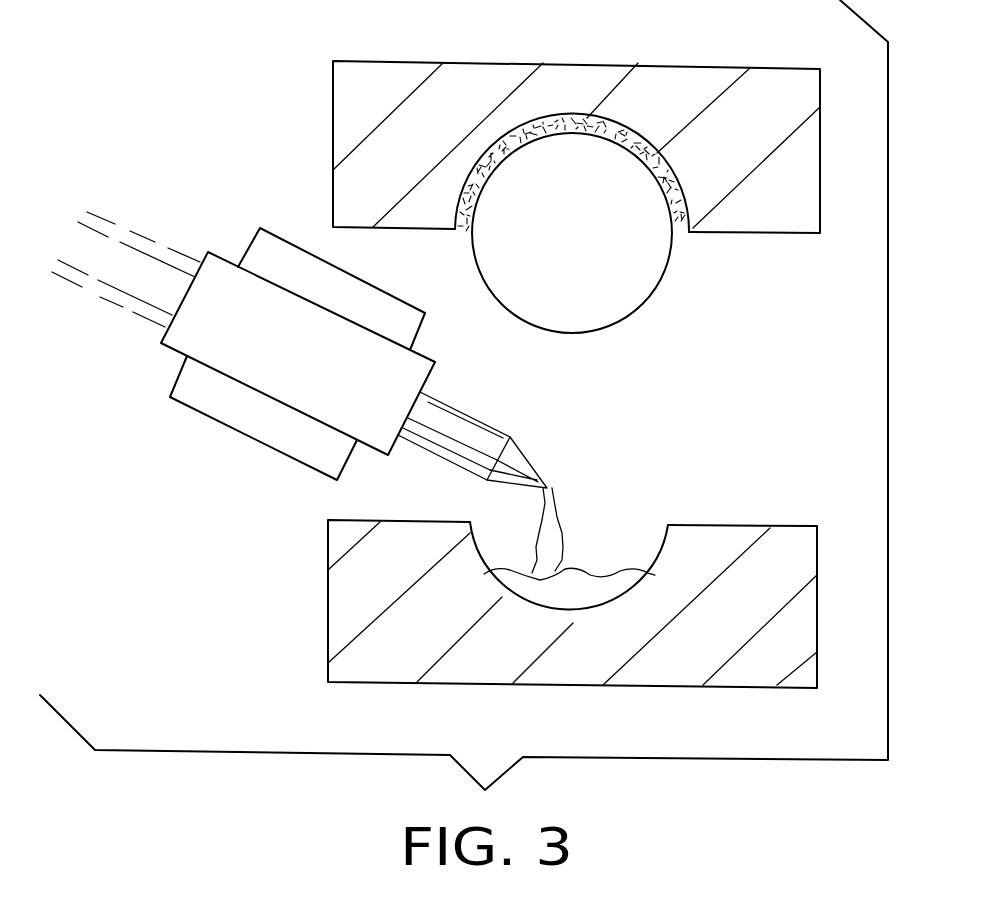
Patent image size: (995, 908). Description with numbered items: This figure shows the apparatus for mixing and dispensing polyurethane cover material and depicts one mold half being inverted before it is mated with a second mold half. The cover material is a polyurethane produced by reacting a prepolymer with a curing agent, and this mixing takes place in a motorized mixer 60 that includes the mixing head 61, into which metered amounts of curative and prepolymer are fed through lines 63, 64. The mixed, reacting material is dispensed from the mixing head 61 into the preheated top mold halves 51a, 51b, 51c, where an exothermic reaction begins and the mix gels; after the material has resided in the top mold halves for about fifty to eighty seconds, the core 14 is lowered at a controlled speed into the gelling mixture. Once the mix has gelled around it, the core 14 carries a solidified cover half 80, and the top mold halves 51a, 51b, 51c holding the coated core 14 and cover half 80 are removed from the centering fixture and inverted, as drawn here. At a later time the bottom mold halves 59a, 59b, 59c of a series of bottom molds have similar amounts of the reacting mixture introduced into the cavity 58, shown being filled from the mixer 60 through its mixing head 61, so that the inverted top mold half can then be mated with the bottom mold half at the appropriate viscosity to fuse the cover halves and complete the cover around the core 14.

The core 14 is at (591, 236).
The top mold half 51a is at (497, 40).
The top mold half 51b is at (576, 147).
The top mold half 51c is at (576, 147).
The cavity 58 is at (658, 545).
The bottom mold half 59a is at (350, 602).
The bottom mold half 59b is at (572, 604).
The bottom mold half 59c is at (572, 604).
The torch assembly 60 is at (232, 251).
The mixing head 61 is at (318, 366).
The line 63 is at (102, 290).
The line 64 is at (135, 245).
The solidified cover half 80 is at (613, 157).